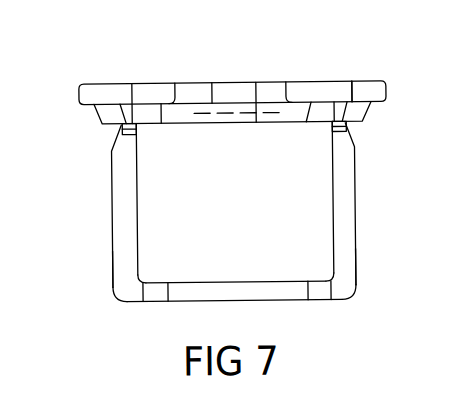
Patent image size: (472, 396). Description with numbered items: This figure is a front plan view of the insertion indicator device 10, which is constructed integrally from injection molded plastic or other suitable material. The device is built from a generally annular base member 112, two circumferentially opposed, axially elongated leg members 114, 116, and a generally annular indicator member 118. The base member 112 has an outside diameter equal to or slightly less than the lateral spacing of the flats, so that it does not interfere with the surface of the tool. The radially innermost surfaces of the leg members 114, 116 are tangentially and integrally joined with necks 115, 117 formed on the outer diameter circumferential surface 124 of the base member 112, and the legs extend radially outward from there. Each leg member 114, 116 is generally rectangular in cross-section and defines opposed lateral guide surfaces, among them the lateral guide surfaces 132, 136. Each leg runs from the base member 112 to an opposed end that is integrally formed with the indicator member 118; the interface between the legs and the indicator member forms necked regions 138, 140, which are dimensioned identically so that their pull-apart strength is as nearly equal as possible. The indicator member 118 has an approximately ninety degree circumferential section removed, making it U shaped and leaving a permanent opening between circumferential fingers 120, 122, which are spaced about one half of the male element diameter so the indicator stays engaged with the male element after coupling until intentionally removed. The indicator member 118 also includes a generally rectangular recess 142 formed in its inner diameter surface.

The insertion indicator device 10 is at (90, 56).
The base member 112 is at (226, 301).
The leg member 114 is at (347, 202).
The neck 115 is at (344, 294).
The leg member 116 is at (122, 203).
The neck 117 is at (128, 294).
The indicator member 118 is at (353, 92).
The circumferential finger 120 is at (176, 95).
The circumferential finger 122 is at (289, 84).
The outer diameter circumferential surface 124 is at (268, 290).
The lateral guide surface 132 is at (125, 250).
The lateral guide surface 136 is at (343, 255).
The necked region 138 is at (345, 131).
The necked region 140 is at (124, 130).
The rectangular recess 142 is at (213, 83).